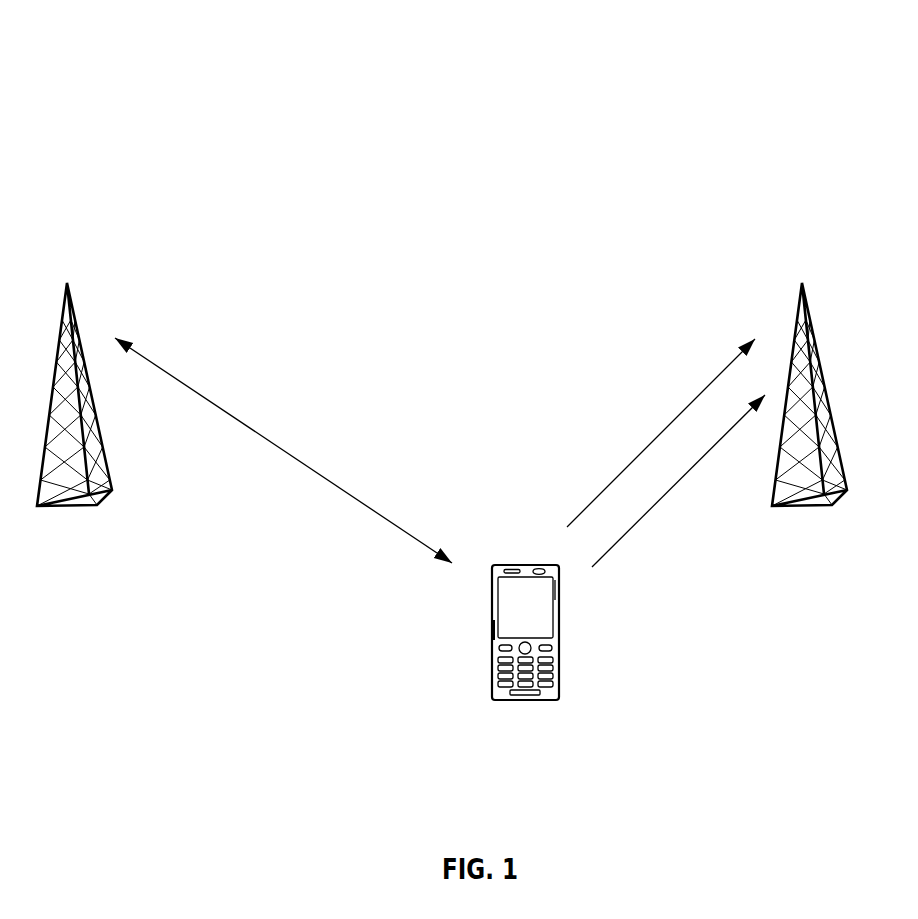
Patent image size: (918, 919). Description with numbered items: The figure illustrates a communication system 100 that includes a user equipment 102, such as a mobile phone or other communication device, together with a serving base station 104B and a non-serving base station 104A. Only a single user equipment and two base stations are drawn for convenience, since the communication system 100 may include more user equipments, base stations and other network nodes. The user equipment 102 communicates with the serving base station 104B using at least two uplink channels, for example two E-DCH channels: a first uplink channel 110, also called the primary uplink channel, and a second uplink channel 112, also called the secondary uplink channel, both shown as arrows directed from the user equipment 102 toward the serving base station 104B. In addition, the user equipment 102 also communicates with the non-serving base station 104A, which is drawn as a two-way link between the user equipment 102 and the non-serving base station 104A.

The communication system 100 is at (104, 75).
The user equipment 102 is at (485, 642).
The non-serving base station 104A is at (78, 288).
The serving base station 104B is at (792, 312).
The first uplink channel 110 is at (693, 393).
The second uplink channel 112 is at (650, 510).